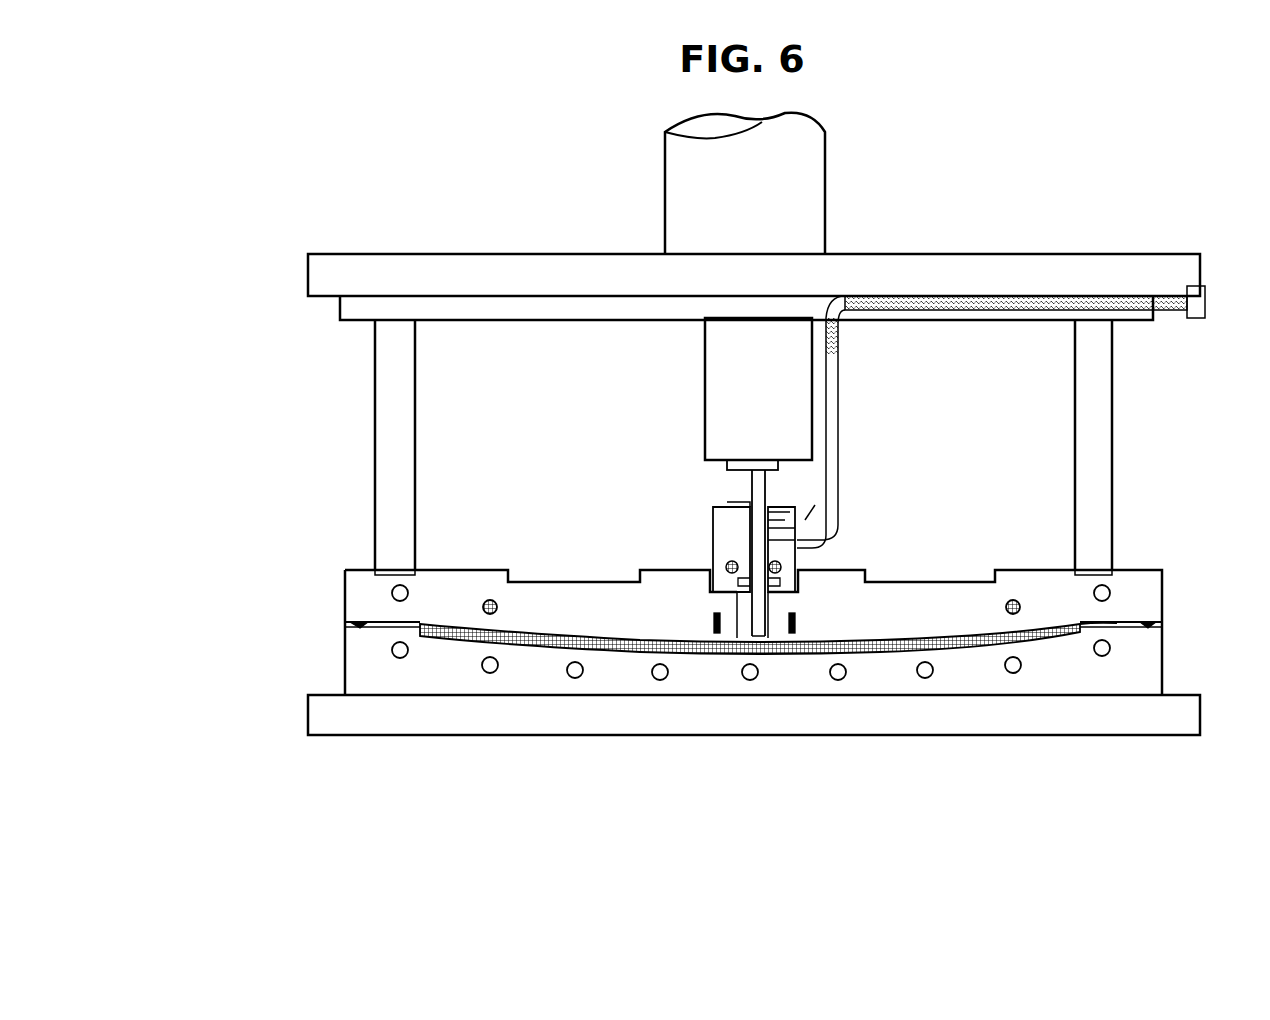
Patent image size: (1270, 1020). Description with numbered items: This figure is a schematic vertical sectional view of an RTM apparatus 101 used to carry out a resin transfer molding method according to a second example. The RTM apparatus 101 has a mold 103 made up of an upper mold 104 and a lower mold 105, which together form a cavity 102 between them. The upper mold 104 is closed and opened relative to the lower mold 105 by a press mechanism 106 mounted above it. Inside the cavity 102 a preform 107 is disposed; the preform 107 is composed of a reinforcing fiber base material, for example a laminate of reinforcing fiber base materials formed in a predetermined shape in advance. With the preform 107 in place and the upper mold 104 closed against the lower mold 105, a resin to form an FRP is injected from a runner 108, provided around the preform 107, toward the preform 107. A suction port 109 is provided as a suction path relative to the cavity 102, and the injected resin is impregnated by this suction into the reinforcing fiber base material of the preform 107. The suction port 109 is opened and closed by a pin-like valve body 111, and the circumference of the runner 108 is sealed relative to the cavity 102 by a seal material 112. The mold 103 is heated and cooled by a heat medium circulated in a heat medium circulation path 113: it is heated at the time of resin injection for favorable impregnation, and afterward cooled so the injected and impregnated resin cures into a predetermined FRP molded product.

The RTM apparatus 101 is at (1028, 193).
The cavity 102 is at (520, 648).
The mold 103 is at (660, 628).
The upper mold 104 is at (360, 597).
The lower mold 105 is at (368, 660).
The press mechanism 106 is at (800, 200).
The preform 107 is at (622, 652).
The runner 108 is at (1117, 625).
The suction port 109 is at (760, 636).
The valve body 111 is at (757, 533).
The seal material 112 is at (1150, 628).
The heat medium circulation path 113 is at (1047, 628).